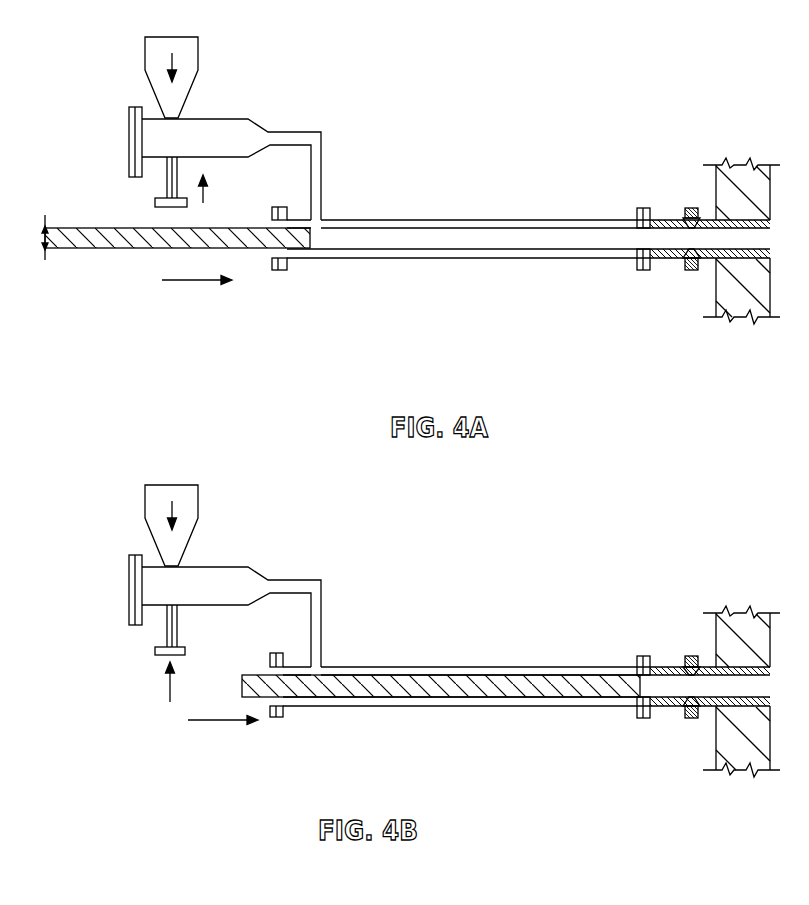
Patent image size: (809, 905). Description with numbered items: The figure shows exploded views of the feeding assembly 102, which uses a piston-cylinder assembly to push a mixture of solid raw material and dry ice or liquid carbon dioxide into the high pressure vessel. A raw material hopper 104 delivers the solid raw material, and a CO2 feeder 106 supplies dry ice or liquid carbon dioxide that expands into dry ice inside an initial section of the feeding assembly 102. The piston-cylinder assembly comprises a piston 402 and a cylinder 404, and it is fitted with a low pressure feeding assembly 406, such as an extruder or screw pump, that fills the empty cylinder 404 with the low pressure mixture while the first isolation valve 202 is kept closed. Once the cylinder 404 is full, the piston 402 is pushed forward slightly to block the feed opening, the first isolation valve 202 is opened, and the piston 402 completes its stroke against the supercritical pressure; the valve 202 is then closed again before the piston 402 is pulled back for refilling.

In FIG. 4A, the feeding assembly 102 is at (337, 327).
In FIG. 4B, the feeding assembly 102 is at (215, 775).
In FIG. 4A, the raw material hopper 104 is at (145, 65).
In FIG. 4B, the raw material hopper 104 is at (143, 513).
In FIG. 4A, the CO2 feeder 106 is at (155, 205).
In FIG. 4B, the CO2 feeder 106 is at (155, 652).
In FIG. 4A, the first isolation valve 202 is at (678, 270).
In FIG. 4B, the first isolation valve 202 is at (673, 718).
In FIG. 4A, the piston 402 is at (137, 250).
In FIG. 4B, the piston 402 is at (447, 700).
In FIG. 4A, the cylinder 404 is at (477, 258).
In FIG. 4B, the cylinder 404 is at (548, 708).
In FIG. 4A, the low pressure feeding assembly 406 is at (230, 118).
In FIG. 4B, the low pressure feeding assembly 406 is at (230, 566).